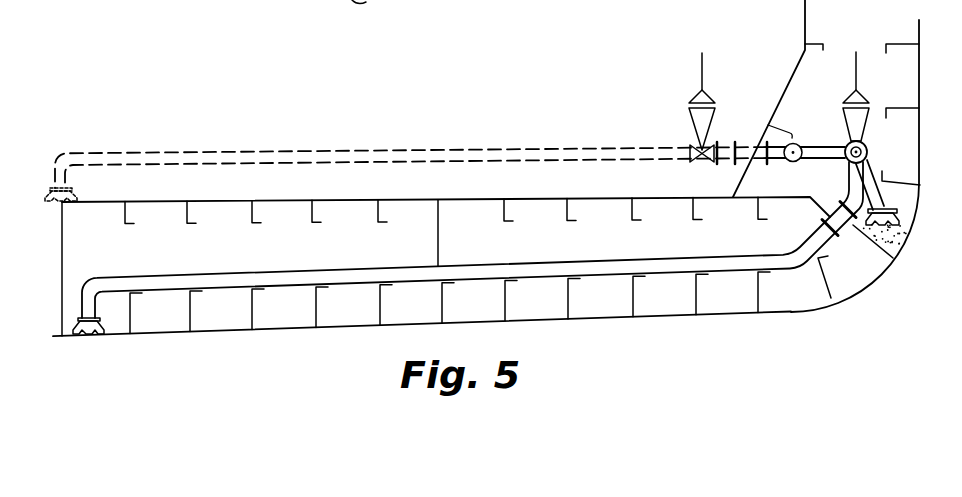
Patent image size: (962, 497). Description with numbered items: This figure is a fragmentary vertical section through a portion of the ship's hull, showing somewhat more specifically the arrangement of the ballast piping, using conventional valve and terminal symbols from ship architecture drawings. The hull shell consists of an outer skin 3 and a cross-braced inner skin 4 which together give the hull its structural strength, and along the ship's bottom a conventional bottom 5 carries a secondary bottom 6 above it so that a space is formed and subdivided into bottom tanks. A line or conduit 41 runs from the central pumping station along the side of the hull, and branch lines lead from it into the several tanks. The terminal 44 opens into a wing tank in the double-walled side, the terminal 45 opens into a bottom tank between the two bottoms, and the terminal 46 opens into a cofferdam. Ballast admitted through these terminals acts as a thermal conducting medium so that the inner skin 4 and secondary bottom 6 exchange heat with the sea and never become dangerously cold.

The outer skin 3 is at (921, 77).
The inner skin 4 is at (808, 22).
The bottom 5 is at (590, 321).
The secondary bottom 6 is at (478, 200).
The line or conduit 41 is at (867, 150).
The terminals of branch lines extending into the wing tanks 44 is at (898, 215).
The terminals of the line extending into the bottom tanks 45 is at (97, 337).
The terminals of branch lines leading into the cofferdams 46 is at (58, 201).